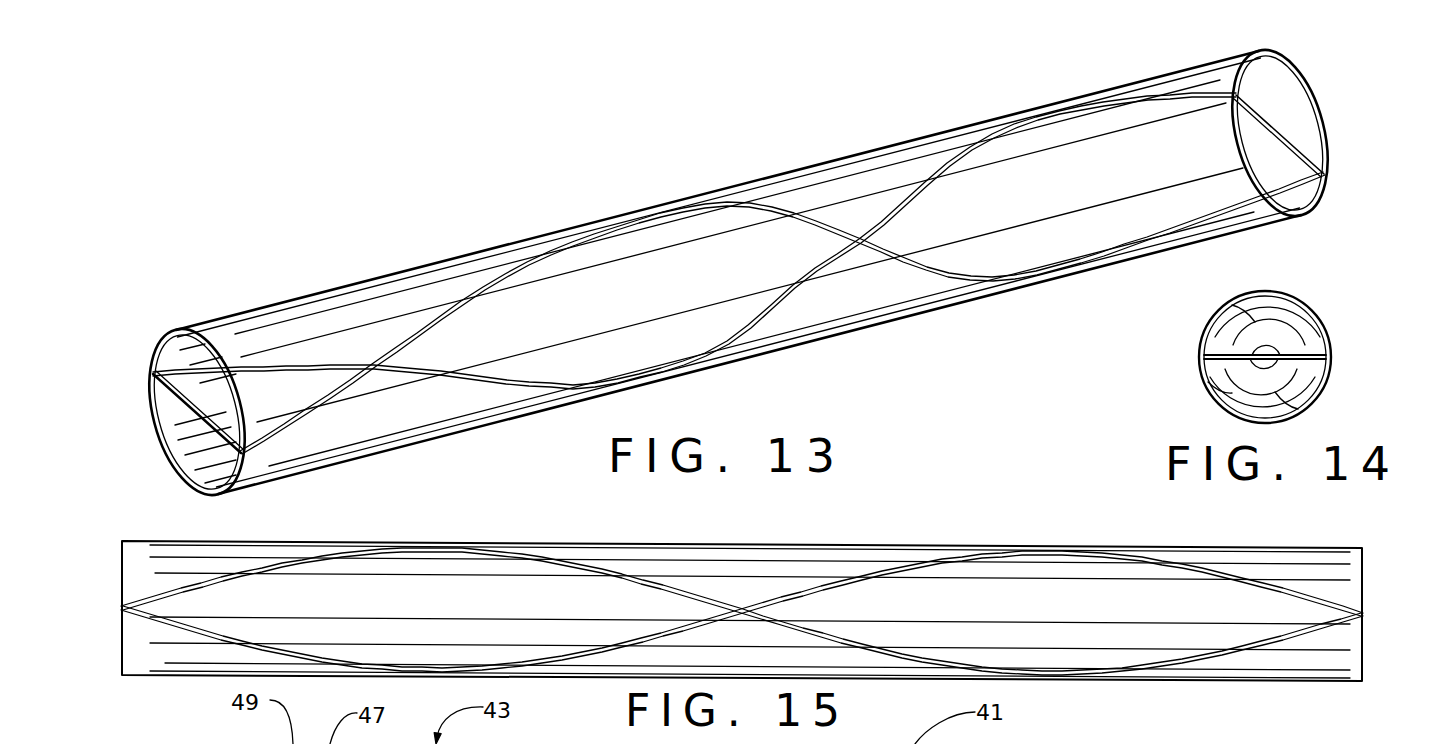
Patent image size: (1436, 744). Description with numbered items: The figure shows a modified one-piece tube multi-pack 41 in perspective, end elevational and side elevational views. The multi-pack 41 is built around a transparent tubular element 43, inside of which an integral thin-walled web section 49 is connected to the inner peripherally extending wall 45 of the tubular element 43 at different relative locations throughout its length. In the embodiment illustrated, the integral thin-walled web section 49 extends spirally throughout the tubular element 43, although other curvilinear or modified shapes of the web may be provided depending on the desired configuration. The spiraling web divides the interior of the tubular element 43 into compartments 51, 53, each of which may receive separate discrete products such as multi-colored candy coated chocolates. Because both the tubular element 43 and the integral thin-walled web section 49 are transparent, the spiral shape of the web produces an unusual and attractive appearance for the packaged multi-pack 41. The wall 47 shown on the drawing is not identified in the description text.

In FIG. 13, the one-piece tube multi-pack 41 is at (721, 273).
In FIG. 14, the one-piece tube multi-pack 41 is at (1277, 337).
In FIG. 15, the one-piece tube multi-pack 41 is at (742, 570).
In FIG. 13, the tubular element 43 is at (521, 236).
In FIG. 14, the tubular element 43 is at (1280, 291).
In FIG. 15, the tubular element 43 is at (836, 539).
In FIG. 13, the inner peripherally extending wall 45 is at (152, 360).
In FIG. 14, the inner peripherally extending wall 45 is at (1230, 393).
In FIG. 13, the tube wall 47 is at (387, 275).
In FIG. 14, the tube wall 47 is at (1200, 333).
In FIG. 15, the tube wall 47 is at (423, 540).
In FIG. 13, the integral thin-walled web section 49 is at (182, 400).
In FIG. 14, the integral thin-walled web section 49 is at (1283, 352).
In FIG. 15, the integral thin-walled web section 49 is at (254, 570).
In FIG. 13, the compartment 51 is at (185, 373).
In FIG. 14, the compartment 51 is at (1232, 305).
In FIG. 13, the compartment 53 is at (200, 447).
In FIG. 14, the compartment 53 is at (1312, 408).